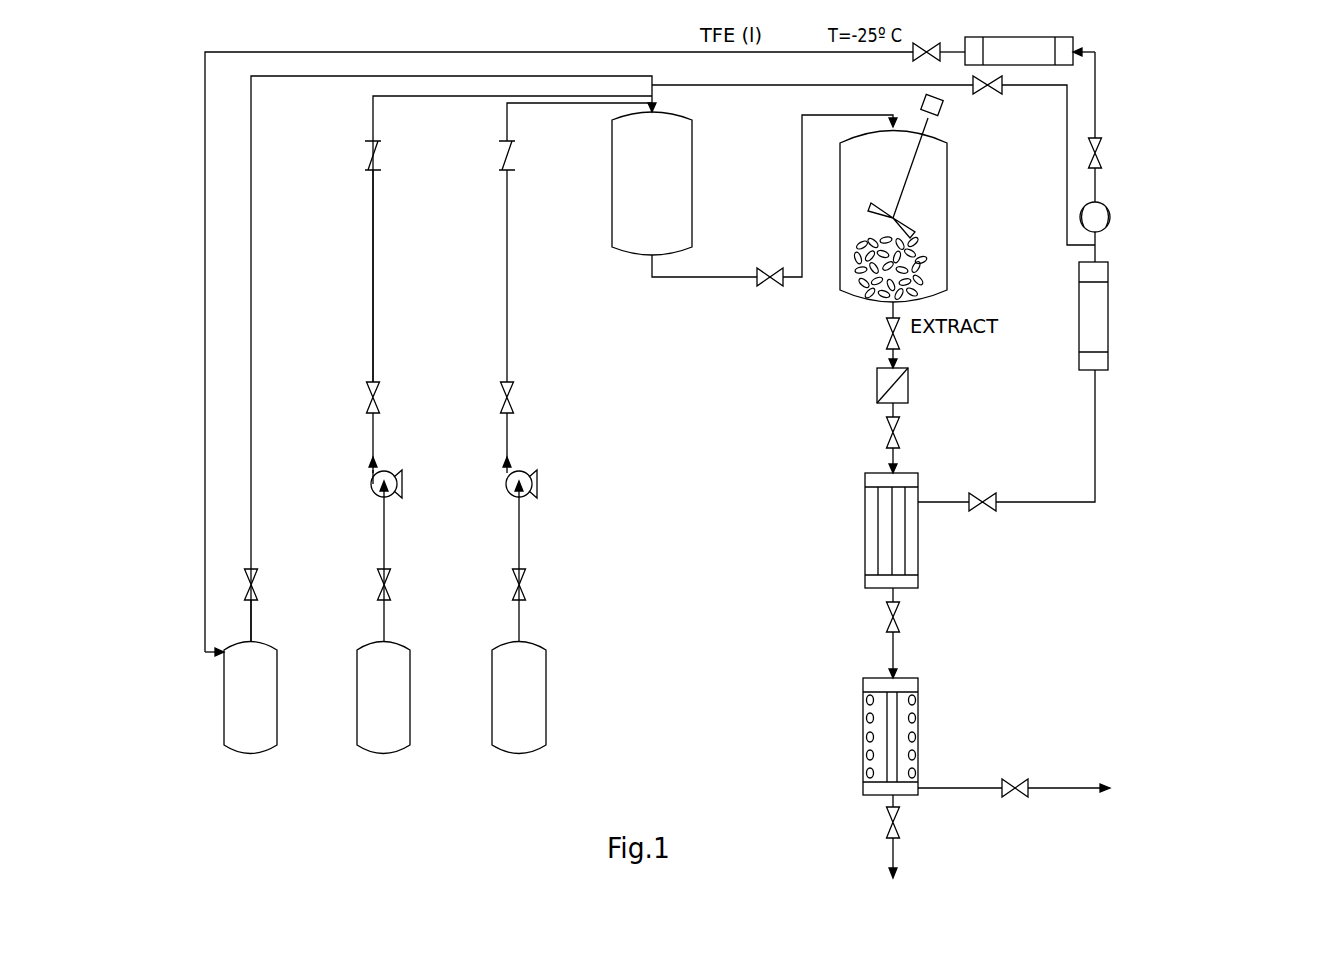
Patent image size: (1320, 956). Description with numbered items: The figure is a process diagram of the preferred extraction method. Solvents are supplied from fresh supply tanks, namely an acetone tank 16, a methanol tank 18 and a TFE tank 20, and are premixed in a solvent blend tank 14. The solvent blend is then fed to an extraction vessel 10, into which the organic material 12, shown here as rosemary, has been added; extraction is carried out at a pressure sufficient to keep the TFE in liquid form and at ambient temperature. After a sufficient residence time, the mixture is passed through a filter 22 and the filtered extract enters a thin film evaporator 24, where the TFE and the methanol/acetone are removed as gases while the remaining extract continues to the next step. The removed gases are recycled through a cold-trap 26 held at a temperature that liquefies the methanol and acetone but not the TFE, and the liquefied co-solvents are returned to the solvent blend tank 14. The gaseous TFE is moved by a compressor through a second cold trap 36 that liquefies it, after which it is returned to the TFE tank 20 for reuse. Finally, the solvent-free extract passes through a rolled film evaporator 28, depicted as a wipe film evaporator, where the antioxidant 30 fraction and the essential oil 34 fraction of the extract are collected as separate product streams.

The extraction vessel 10 is at (949, 198).
The organic material 12 is at (857, 275).
The solvent blend tank 14 is at (736, 220).
The acetone tank 16 is at (384, 482).
The methanol tank 18 is at (518, 482).
The TFE tank 20 is at (298, 467).
The filter 22 is at (884, 388).
The thin film evaporator 24 is at (918, 530).
The cold-trap 26 is at (1107, 325).
The rolled film evaporator 28 is at (920, 718).
The antioxidant fraction 30 is at (863, 851).
The essential oil fraction 34 is at (1061, 803).
The second cold trap 36 is at (1115, 212).